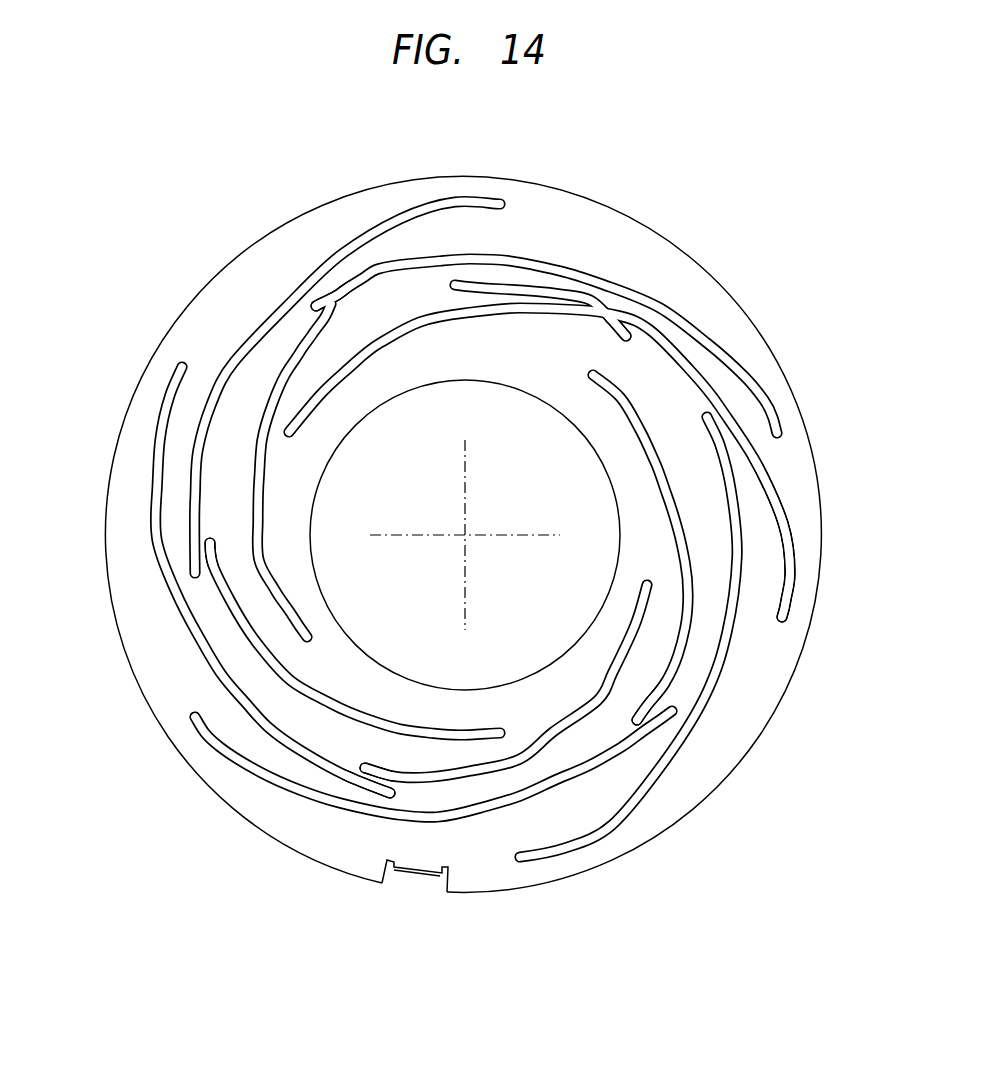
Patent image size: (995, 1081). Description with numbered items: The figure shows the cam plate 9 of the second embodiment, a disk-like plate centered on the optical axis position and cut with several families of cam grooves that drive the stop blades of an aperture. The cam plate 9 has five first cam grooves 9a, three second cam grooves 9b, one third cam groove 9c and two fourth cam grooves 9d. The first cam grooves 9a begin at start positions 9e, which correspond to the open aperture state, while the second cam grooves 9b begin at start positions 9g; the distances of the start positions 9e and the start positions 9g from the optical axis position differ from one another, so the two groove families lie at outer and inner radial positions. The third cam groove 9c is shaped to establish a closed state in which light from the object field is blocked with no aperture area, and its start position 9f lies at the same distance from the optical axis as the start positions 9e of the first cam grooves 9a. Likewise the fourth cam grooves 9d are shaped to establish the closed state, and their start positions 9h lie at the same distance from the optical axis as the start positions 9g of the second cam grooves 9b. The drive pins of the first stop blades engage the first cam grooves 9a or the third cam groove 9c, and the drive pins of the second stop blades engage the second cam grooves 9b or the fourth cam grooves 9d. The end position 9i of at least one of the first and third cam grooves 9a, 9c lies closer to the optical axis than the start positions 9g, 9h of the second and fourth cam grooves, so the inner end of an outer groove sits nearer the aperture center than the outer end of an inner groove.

The cam plate 9 is at (210, 303).
The first cam grooves 9a is at (302, 287).
The second cam grooves 9b is at (444, 326).
The third cam groove 9c is at (774, 478).
The fourth cam grooves 9d is at (263, 490).
The start positions of the first cam grooves 9e is at (498, 201).
The start position of the third cam groove 9f is at (788, 621).
The start positions of the second cam grooves 9g is at (632, 339).
The start positions of the fourth cam grooves 9h is at (340, 299).
The end position of a cam groove 9i is at (458, 283).